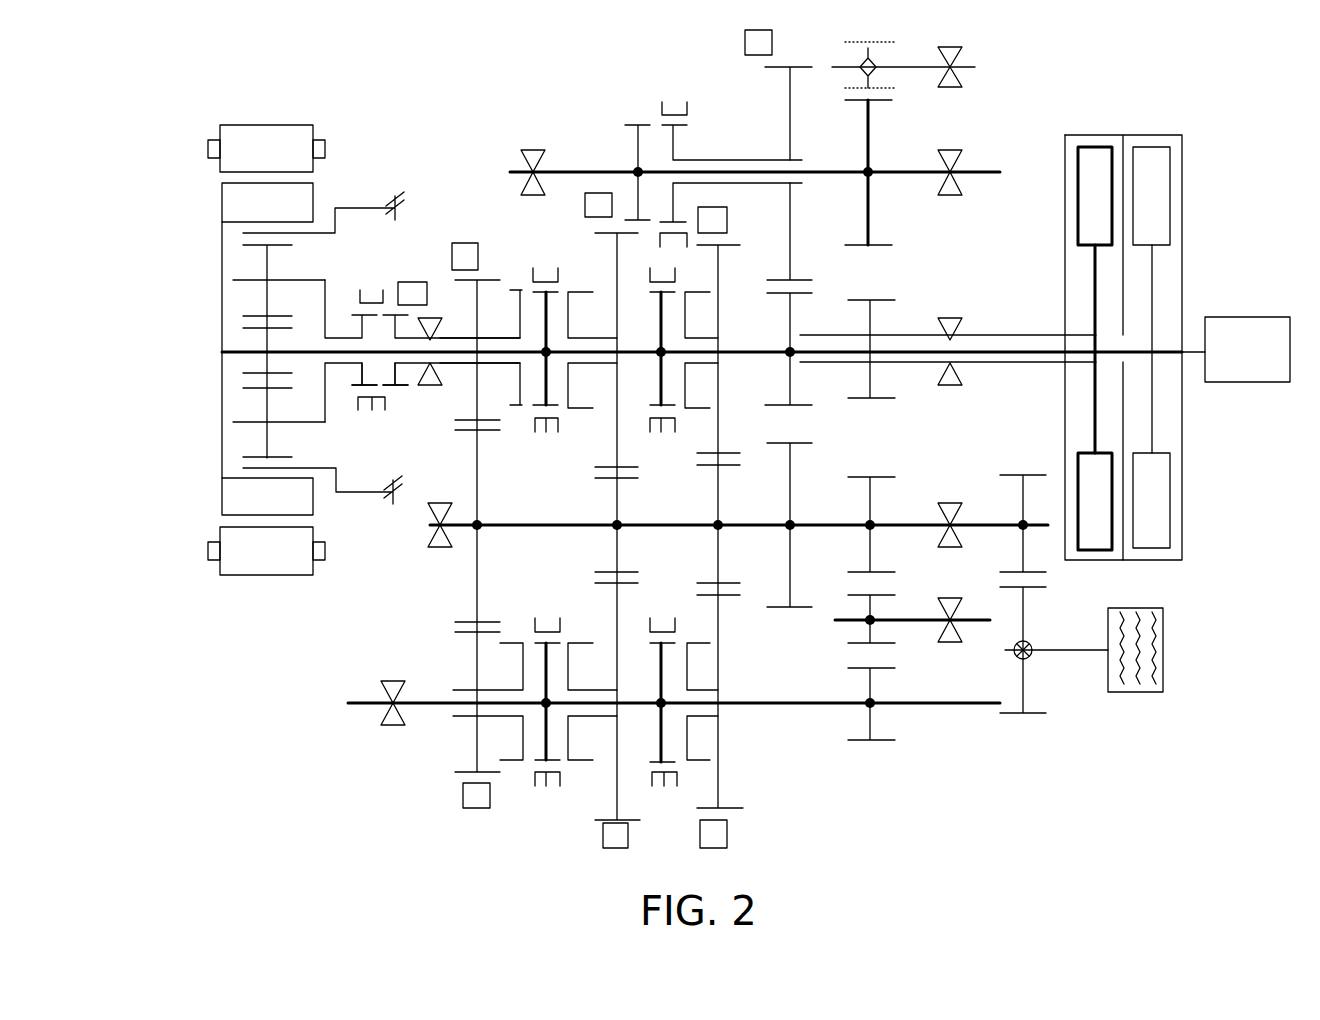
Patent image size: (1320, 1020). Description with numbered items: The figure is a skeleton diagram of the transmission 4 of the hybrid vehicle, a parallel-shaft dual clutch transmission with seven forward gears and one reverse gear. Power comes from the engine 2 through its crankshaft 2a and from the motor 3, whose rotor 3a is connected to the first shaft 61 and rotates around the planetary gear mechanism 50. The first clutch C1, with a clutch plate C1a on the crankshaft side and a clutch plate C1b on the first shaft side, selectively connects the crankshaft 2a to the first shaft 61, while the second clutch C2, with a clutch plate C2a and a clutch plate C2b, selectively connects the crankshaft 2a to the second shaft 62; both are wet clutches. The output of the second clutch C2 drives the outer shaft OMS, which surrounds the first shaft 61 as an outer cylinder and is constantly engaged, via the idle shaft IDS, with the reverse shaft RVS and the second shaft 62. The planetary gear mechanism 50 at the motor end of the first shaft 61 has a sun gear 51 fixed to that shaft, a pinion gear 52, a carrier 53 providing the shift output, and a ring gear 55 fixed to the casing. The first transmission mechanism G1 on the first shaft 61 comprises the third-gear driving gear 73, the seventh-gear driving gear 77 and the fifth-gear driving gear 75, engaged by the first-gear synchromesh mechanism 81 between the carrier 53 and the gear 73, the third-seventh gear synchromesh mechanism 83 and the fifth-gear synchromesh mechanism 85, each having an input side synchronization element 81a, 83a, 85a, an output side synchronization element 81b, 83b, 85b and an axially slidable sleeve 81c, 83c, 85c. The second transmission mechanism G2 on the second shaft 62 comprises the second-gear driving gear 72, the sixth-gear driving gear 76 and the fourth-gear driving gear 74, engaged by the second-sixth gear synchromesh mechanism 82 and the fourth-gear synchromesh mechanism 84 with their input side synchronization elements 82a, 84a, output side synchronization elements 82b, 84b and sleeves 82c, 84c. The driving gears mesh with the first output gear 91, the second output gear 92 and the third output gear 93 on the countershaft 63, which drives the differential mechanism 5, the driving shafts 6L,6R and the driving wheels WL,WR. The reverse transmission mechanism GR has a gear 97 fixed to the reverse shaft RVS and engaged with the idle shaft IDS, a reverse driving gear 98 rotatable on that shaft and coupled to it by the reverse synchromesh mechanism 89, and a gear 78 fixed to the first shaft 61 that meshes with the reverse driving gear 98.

The engine 2 is at (1236, 317).
The crankshaft 2a is at (1190, 355).
The motor 3 is at (285, 118).
The rotor 3a is at (240, 205).
The transmission 4 is at (995, 80).
The differential mechanism 5 is at (1032, 658).
The planetary gear mechanism 50 is at (318, 425).
The sun gear 51 is at (250, 348).
The pinion gear 52 is at (262, 272).
The carrier 53 is at (328, 283).
The ring gear 55 is at (320, 232).
The first shaft 61 is at (800, 362).
The second shaft 62 is at (780, 700).
The countershaft 63 is at (812, 525).
The second-gear driving gear 72 is at (462, 775).
The third-gear driving gear 73 is at (477, 280).
The fourth-gear driving gear 74 is at (725, 808).
The fifth-gear driving gear 75 is at (720, 245).
The sixth-gear driving gear 76 is at (628, 820).
The seventh-gear driving gear 77 is at (600, 233).
The gear 78 is at (790, 328).
The first-gear synchromesh mechanism 81 is at (372, 290).
The input side synchronization element 81a is at (356, 392).
The output side synchronization element 81b is at (398, 390).
The sleeve 81c is at (372, 412).
The second-sixth gear synchromesh mechanism 82 is at (546, 605).
The input side synchronization element 82a is at (540, 765).
The output side synchronization element 82b is at (505, 763).
The sleeve 82c is at (553, 786).
The third-seventh gear synchromesh mechanism 83 is at (565, 282).
The input side synchronization element 83a is at (548, 410).
The output side synchronization element 83b is at (520, 408).
The sleeve 83c is at (546, 434).
The fourth-gear synchromesh mechanism 84 is at (661, 605).
The input side synchronization element 84a is at (652, 775).
The output side synchronization element 84b is at (692, 763).
The sleeve 84c is at (664, 788).
The fifth-gear synchromesh mechanism 85 is at (666, 265).
The input side synchronization element 85a is at (658, 408).
The output side synchronization element 85b is at (686, 410).
The sleeve 85c is at (663, 434).
The reverse synchromesh mechanism 89 is at (673, 100).
The first output gear 91 is at (477, 490).
The second output gear 92 is at (620, 480).
The third output gear 93 is at (720, 465).
The gear 97 is at (852, 100).
The reverse driving gear 98 is at (790, 130).
The first clutch C1 is at (1155, 135).
The clutch plate C1a is at (1123, 145).
The clutch plate C1b is at (1163, 188).
The second clutch C2 is at (1085, 135).
The clutch plate C2a is at (1065, 195).
The clutch plate C2b is at (1090, 210).
The first transmission mechanism G1 is at (480, 195).
The second transmission mechanism G2 is at (430, 660).
The reverse transmission mechanism GR is at (658, 55).
The idle shaft IDS is at (905, 63).
The outer shaft OMS is at (1020, 332).
The reverse shaft RVS is at (872, 170).
The driving shafts 6L,6R is at (1070, 648).
The driving wheels WL,WR is at (1150, 692).